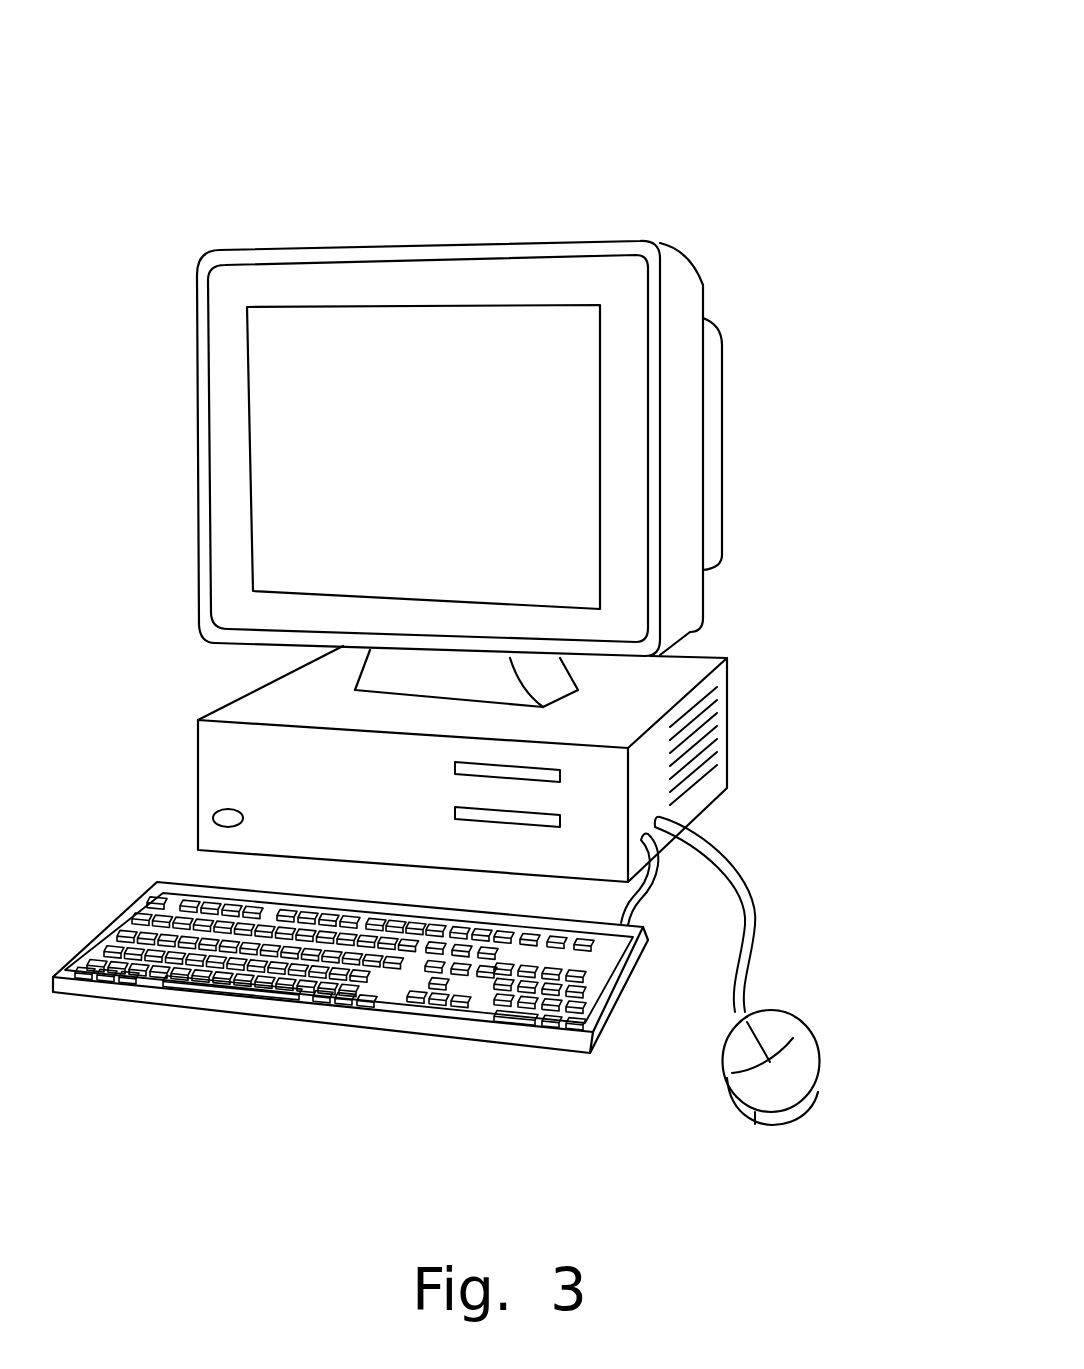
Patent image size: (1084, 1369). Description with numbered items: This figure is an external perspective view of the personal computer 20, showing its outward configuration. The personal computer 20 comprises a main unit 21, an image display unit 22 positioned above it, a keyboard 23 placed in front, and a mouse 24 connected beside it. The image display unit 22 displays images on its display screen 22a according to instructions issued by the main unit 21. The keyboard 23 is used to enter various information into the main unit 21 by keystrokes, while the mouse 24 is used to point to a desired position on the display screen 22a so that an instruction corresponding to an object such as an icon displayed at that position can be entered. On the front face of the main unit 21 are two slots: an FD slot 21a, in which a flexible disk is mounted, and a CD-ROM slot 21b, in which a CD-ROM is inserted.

The personal computer 20 is at (582, 178).
The main unit 21 is at (710, 742).
The FD slot 21a is at (456, 768).
The CD-ROM slot 21b is at (456, 815).
The image display unit 22 is at (675, 395).
The display screen 22a is at (563, 488).
The keyboard 23 is at (228, 985).
The mouse 24 is at (797, 1075).